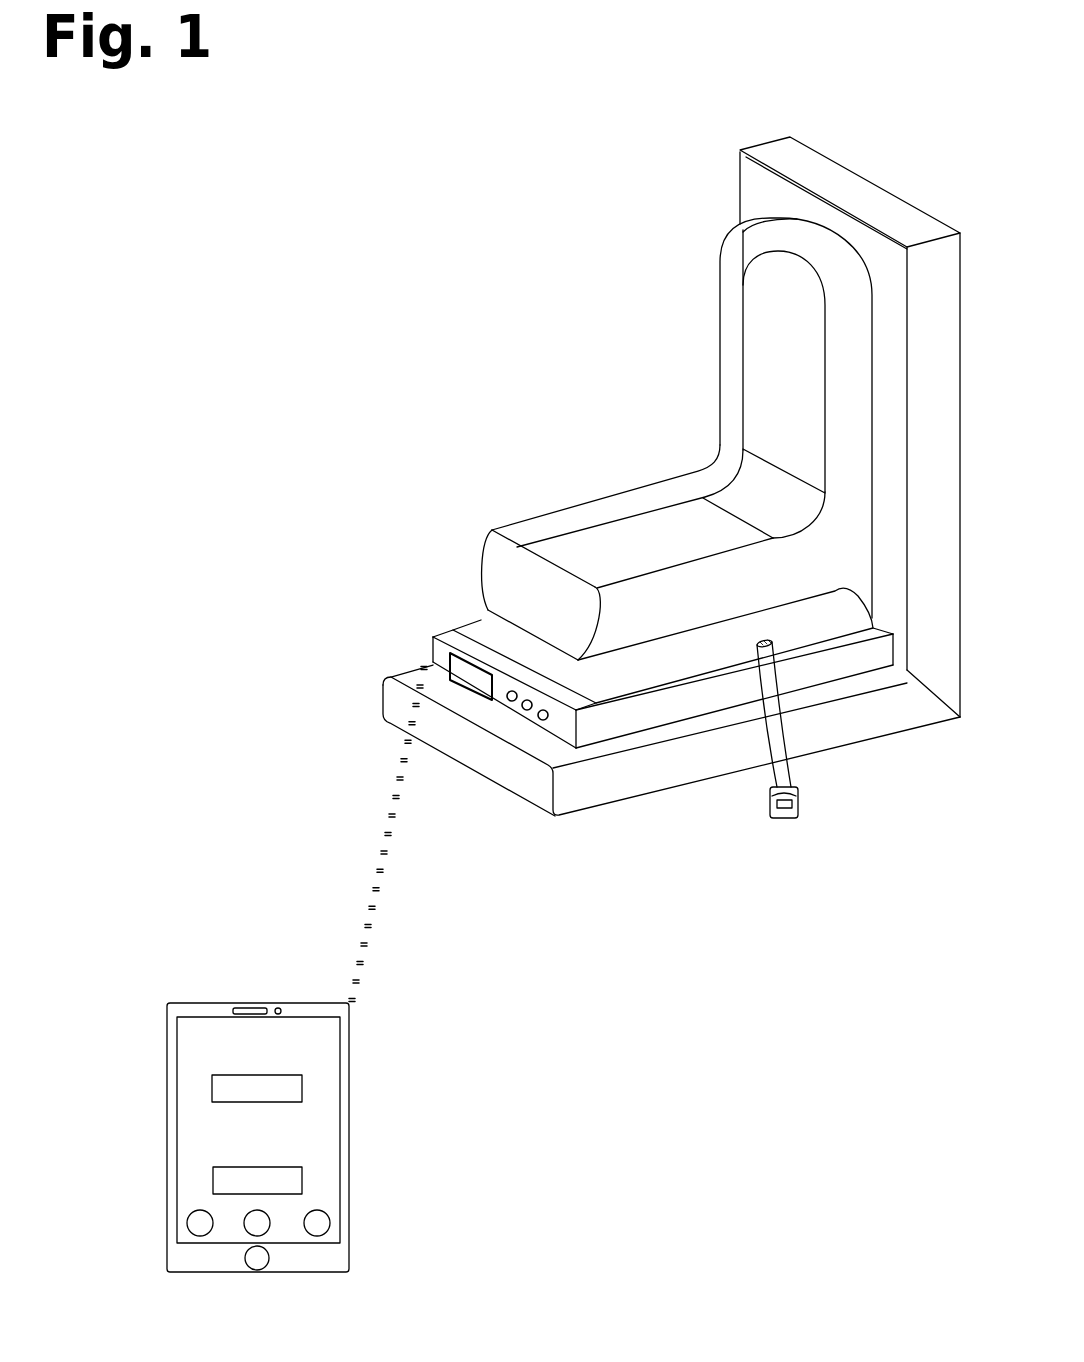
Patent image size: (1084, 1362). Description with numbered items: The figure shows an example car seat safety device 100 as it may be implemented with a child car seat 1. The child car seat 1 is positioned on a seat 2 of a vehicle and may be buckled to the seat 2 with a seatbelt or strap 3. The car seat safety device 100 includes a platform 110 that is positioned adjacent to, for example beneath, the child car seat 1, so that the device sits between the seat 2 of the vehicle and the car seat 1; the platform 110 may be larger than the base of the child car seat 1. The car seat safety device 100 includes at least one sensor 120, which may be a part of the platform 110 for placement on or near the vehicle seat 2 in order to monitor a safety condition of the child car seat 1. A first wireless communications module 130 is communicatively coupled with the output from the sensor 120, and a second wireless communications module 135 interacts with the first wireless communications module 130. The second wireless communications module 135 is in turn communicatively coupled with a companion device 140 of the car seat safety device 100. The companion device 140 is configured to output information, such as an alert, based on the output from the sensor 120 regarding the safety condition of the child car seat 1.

The child car seat 1 is at (600, 493).
The seat 2 is at (740, 209).
The seatbelt or strap 3 is at (790, 777).
The car seat safety device 100 is at (434, 625).
The platform 110 is at (650, 735).
The sensor 120 is at (512, 701).
The first wireless communications module 130 is at (433, 665).
The second wireless communications module 135 is at (352, 1002).
The companion device 140 is at (194, 974).